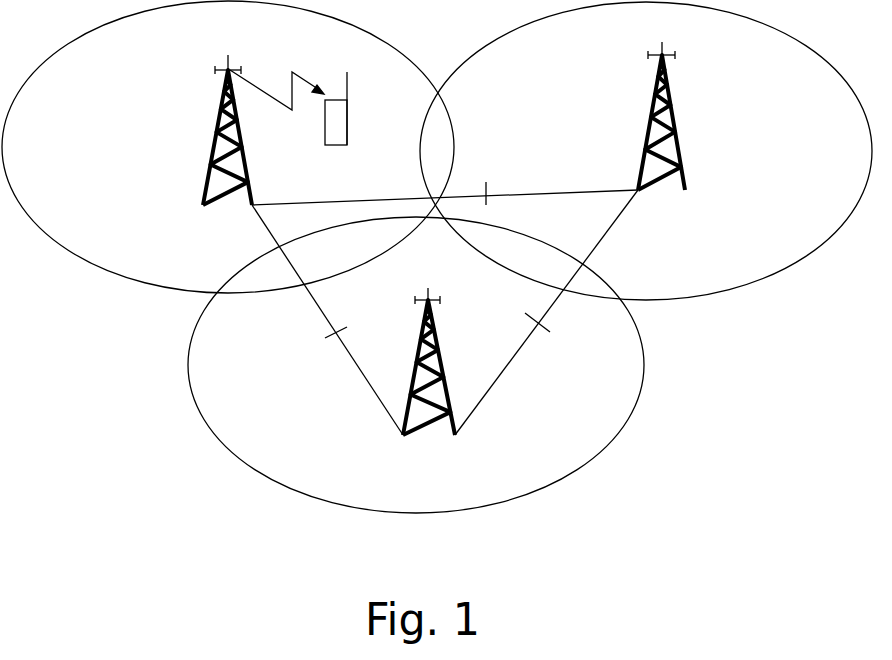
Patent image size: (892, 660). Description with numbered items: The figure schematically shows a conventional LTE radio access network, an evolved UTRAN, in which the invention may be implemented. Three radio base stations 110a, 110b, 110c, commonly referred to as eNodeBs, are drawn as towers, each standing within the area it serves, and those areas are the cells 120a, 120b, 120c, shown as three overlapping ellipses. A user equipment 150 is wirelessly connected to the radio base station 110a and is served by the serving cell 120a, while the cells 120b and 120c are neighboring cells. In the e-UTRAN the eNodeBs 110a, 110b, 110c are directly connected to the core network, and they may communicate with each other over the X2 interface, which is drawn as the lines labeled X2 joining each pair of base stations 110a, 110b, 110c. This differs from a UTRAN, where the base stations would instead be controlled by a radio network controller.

The radio base station 110a is at (162, 135).
The radio base station 110b is at (715, 126).
The radio base station 110c is at (485, 371).
The serving cell 120a is at (122, 89).
The neighboring cell 120b is at (845, 122).
The neighboring cell 120c is at (313, 459).
The user equipment 150 is at (288, 134).
The X2 interface X2 is at (445, 288).